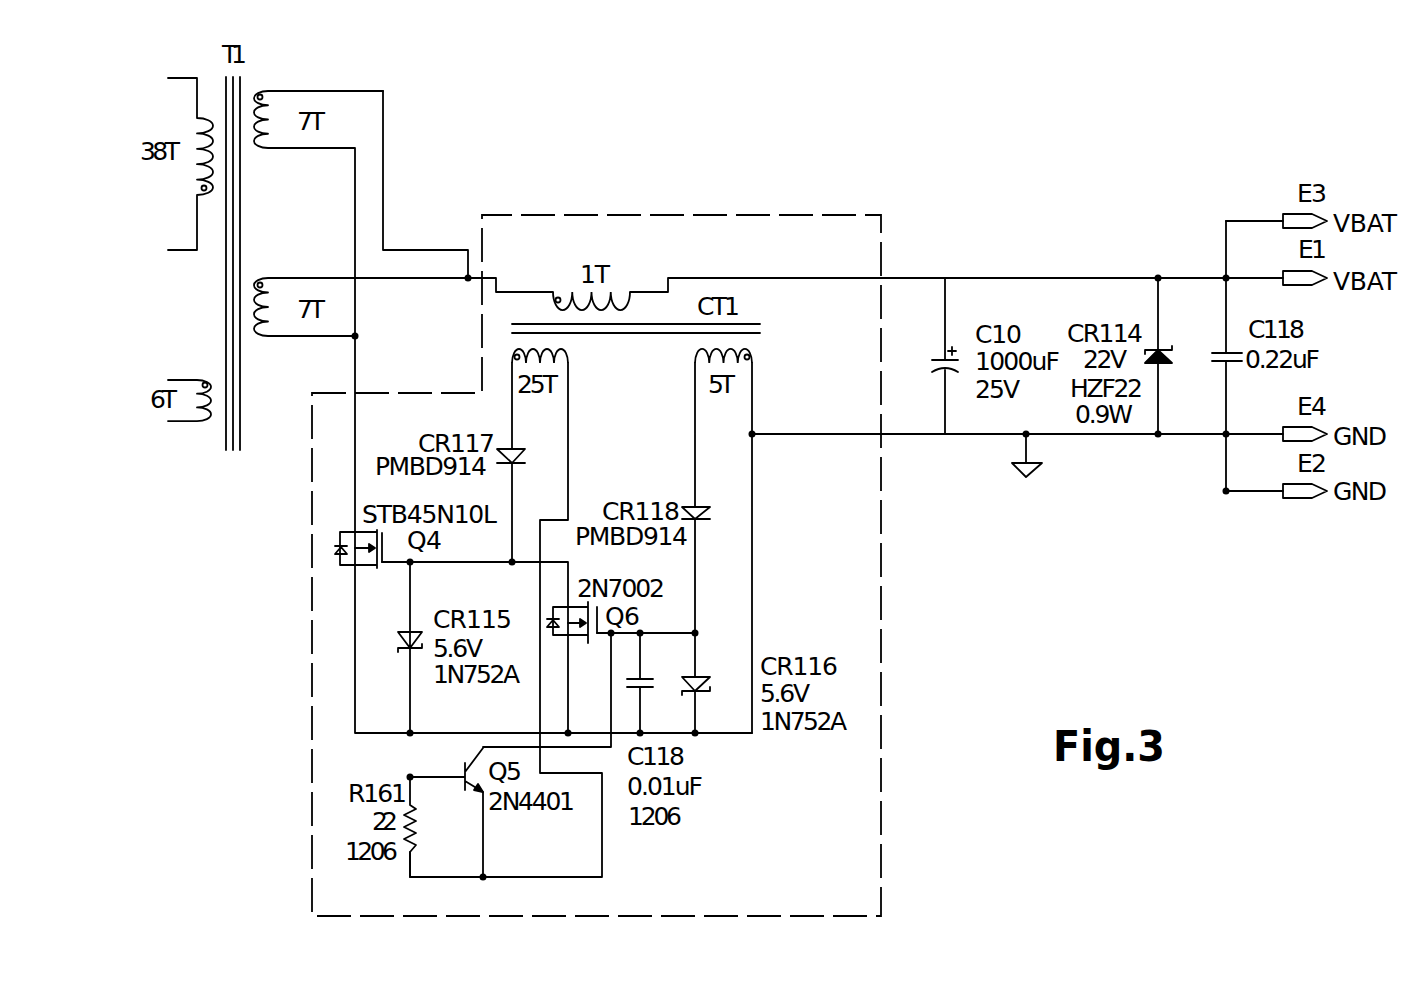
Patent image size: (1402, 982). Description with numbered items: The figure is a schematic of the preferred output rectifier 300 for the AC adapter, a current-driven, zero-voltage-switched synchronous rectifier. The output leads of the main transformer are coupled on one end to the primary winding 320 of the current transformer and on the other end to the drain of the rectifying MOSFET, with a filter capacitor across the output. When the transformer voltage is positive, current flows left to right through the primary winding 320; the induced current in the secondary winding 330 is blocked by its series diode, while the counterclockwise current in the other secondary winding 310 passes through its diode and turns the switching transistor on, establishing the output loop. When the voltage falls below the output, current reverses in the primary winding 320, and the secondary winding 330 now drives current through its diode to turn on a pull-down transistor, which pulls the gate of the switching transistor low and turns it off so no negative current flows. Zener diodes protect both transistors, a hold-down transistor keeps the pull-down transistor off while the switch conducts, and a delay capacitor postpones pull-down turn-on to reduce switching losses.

The output rectifier 300 is at (881, 800).
The secondary winding 310 is at (570, 380).
The primary winding 320 is at (640, 292).
The secondary winding 330 is at (752, 375).